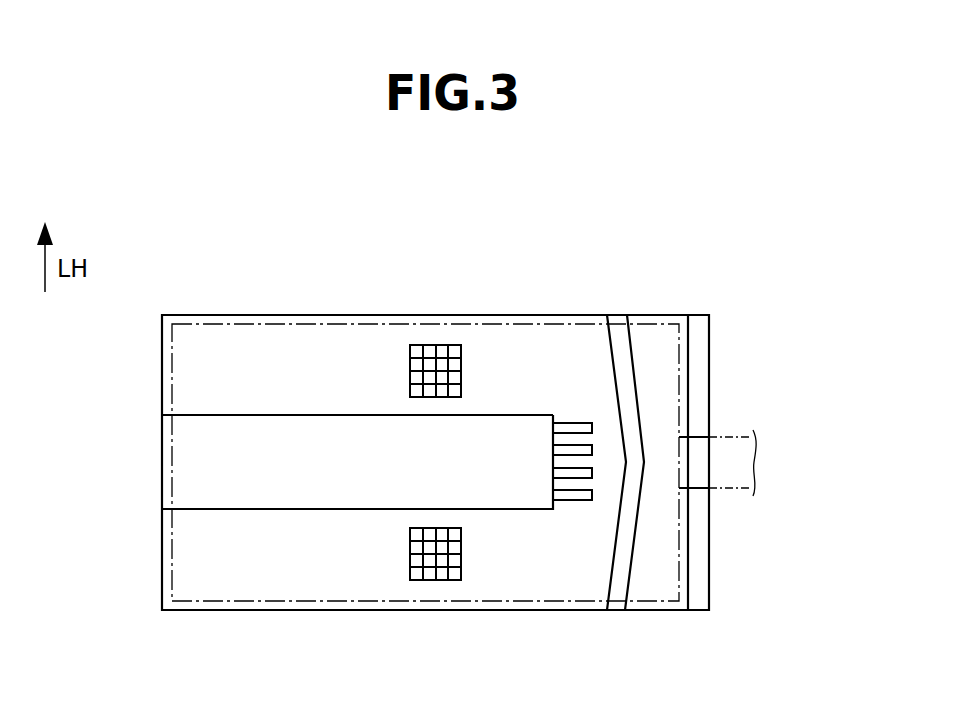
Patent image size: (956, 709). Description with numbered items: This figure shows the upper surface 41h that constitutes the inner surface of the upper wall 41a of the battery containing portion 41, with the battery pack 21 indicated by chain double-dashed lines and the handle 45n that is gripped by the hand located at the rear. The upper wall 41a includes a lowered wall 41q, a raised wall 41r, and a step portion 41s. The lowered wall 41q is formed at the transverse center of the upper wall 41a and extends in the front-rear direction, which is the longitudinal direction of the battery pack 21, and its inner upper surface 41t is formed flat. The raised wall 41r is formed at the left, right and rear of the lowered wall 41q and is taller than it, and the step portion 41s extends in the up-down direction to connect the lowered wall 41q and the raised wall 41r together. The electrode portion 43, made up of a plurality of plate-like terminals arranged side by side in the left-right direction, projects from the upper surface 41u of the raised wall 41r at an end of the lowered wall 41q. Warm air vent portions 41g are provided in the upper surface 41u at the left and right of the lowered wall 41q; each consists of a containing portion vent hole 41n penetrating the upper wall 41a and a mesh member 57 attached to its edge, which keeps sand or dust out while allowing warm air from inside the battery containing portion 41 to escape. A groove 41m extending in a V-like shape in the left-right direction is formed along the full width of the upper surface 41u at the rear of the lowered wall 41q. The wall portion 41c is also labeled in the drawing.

The battery containing portion 41 is at (257, 315).
The wall portion 41c is at (193, 315).
The upper wall 41a is at (328, 367).
The upper surface 41h is at (213, 483).
The step portion 41s is at (208, 415).
The electrode portion 43 is at (573, 418).
The warm air vent portions 41g is at (432, 345).
The mesh members 57 is at (455, 363).
The containing portion vent holes 41n is at (420, 352).
The groove 41m is at (628, 380).
The battery pack 21 is at (683, 555).
The handle 45n is at (732, 488).
The lowered wall 41q is at (283, 478).
The upper surface of lowered wall 41t is at (332, 497).
The raised wall 41r is at (538, 571).
The upper surface of raised wall 41u is at (582, 582).